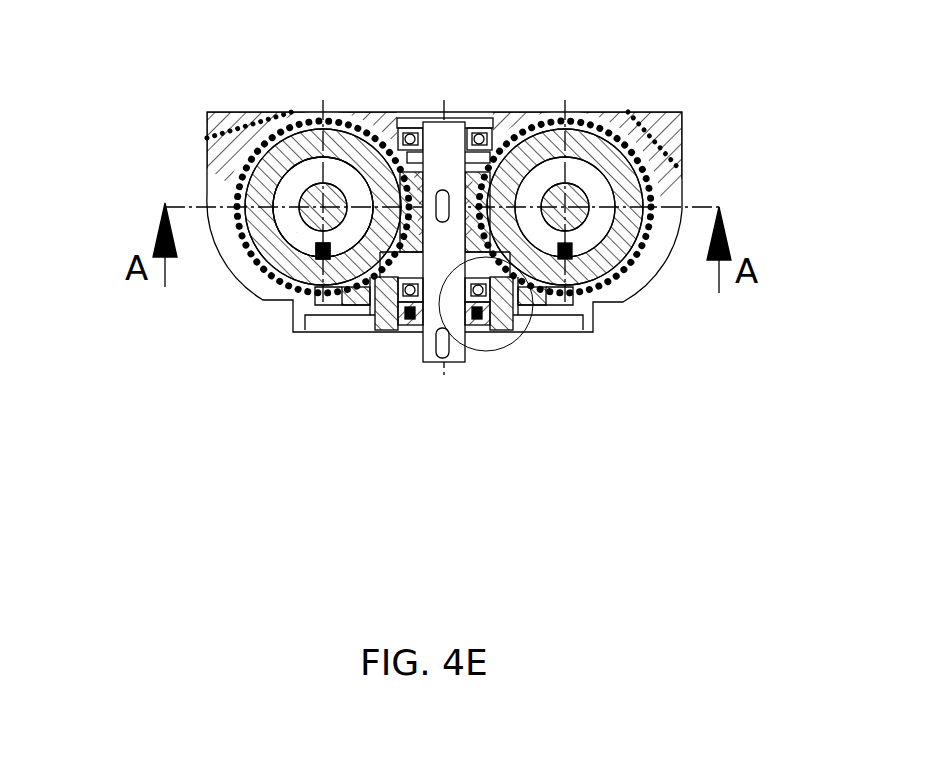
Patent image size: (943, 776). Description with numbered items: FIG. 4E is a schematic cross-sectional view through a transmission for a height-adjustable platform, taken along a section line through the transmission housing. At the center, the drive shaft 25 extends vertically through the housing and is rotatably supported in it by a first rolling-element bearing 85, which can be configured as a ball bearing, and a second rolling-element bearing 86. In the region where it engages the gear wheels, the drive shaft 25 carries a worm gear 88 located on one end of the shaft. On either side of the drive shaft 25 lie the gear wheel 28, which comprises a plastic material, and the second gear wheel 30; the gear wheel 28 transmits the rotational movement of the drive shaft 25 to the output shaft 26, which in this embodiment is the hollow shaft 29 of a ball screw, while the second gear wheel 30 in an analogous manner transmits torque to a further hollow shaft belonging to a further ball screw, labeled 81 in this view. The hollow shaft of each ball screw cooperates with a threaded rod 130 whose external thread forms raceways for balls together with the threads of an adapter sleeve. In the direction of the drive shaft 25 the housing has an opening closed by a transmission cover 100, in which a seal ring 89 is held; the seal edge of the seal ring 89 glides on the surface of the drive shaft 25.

The threaded rod 130 is at (250, 165).
The first rolling-element bearing 85 is at (390, 115).
The worm gear 88 is at (495, 132).
The gear shaft hub 81 is at (597, 213).
The second gear wheel 30 is at (633, 243).
The output shaft 26 is at (303, 219).
The hollow shaft 29 is at (243, 282).
The gear wheel 28 is at (312, 284).
The drive shaft 25 is at (450, 290).
The second rolling-element bearing 86 is at (392, 295).
The seal ring 89 is at (472, 318).
The transmission cover 100 is at (505, 305).